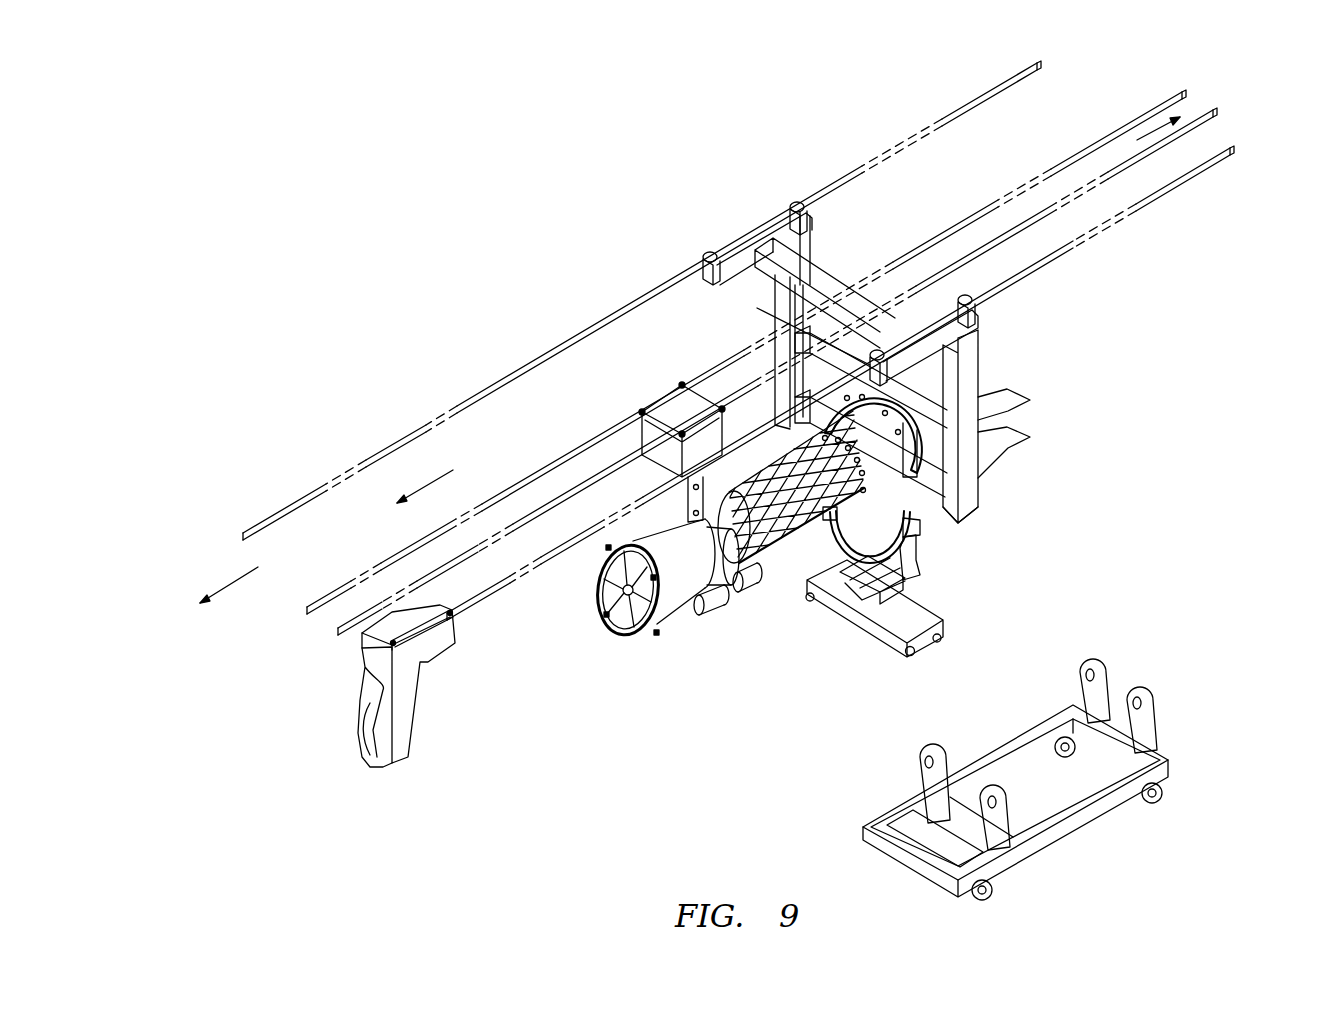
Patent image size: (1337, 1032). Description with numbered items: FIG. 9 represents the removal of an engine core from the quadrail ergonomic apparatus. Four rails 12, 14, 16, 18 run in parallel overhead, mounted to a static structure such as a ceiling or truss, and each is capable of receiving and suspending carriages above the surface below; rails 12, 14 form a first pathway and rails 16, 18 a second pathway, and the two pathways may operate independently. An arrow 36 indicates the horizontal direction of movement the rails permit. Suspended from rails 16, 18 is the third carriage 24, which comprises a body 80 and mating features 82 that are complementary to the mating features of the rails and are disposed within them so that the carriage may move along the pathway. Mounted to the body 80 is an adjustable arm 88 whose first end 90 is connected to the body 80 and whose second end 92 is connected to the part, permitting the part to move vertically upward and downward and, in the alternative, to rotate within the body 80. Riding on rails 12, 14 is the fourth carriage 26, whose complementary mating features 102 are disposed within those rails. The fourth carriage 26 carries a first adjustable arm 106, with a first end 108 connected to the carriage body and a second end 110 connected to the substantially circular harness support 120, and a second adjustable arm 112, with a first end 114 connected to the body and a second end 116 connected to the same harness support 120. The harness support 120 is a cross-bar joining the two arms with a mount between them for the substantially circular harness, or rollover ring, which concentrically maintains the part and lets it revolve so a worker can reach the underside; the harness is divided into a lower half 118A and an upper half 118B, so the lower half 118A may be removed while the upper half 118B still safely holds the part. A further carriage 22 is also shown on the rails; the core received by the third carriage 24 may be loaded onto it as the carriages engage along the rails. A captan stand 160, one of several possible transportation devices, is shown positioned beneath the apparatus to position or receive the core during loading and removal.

The rail 12 is at (946, 114).
The rail 14 is at (1228, 158).
The rail 16 is at (1093, 141).
The rail 18 is at (1214, 112).
The carriage 22 is at (333, 657).
The third carriage 24 is at (601, 421).
The fourth carriage 26 is at (875, 336).
The arrow 36 is at (1153, 113).
The body 80 is at (640, 440).
The mating features 82 is at (640, 411).
The adjustable arm 88 is at (705, 586).
The first end 90 is at (613, 618).
The second end 92 is at (743, 585).
The complementary mating features 102 is at (795, 201).
The first adjustable arm 106 is at (822, 268).
The first end 108 is at (780, 278).
The second end 110 is at (815, 405).
The second adjustable arm 112 is at (979, 425).
The first end 114 is at (980, 364).
The second end 116 is at (965, 508).
The lower half 118A is at (920, 533).
The upper half 118B is at (825, 433).
The substantially circular harness support 120 is at (937, 432).
The captan stand 160 is at (1162, 735).